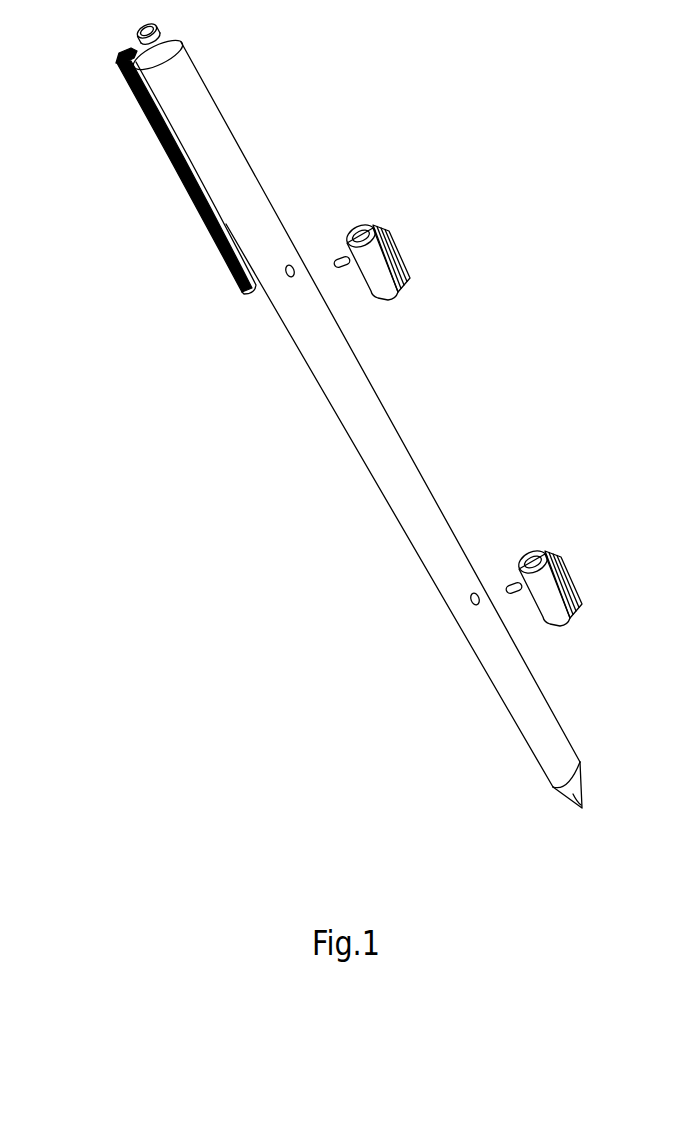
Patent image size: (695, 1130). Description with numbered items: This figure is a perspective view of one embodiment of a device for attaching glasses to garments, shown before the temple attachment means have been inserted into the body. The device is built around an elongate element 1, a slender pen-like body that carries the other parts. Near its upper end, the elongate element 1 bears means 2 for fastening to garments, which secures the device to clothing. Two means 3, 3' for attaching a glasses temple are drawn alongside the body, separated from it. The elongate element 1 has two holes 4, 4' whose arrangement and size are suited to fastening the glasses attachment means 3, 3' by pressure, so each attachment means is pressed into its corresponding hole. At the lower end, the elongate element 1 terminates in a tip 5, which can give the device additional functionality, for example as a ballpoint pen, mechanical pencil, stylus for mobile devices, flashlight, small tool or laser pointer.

The elongate element 1 is at (233, 183).
The means for fastening to garments 2 is at (133, 85).
The means for attaching a glasses temple 3 is at (391, 221).
The means for attaching a glasses temple 3' is at (570, 549).
The hole 4 is at (219, 333).
The hole 4' is at (403, 658).
The tip 5 is at (573, 806).